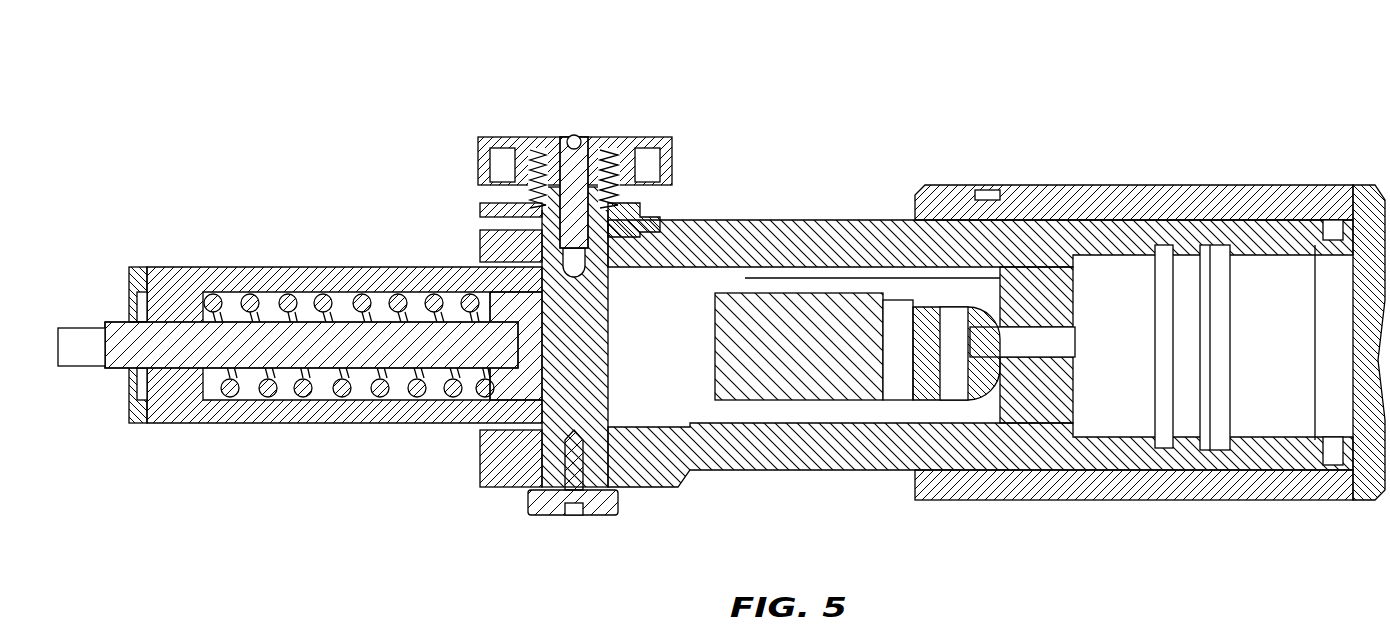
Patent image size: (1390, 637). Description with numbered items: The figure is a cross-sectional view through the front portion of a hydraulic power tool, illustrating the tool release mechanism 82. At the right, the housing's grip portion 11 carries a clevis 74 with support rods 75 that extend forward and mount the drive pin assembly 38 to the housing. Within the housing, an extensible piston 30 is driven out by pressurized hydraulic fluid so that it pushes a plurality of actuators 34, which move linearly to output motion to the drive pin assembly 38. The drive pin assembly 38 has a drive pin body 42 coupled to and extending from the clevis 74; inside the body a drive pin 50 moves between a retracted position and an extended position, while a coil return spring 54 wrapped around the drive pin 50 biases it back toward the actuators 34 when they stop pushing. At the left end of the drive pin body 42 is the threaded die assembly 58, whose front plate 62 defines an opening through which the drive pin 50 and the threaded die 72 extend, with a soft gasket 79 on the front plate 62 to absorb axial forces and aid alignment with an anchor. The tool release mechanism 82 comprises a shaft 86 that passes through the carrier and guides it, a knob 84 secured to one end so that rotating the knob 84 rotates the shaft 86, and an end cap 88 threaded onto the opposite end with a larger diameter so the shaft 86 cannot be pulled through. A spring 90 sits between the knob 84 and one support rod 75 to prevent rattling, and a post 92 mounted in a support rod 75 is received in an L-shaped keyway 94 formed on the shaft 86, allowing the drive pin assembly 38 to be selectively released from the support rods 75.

The grip portion 11 is at (1025, 205).
The piston 30 is at (1010, 380).
The actuators 34 is at (967, 372).
The drive pin assembly 38 is at (297, 331).
The drive pin body 42 is at (285, 267).
The drive pin 50 is at (250, 347).
The return spring 54 is at (248, 292).
The threaded die assembly 58 is at (95, 292).
The front plate 62 is at (137, 423).
The threaded die 72 is at (83, 350).
The clevis 74 is at (1130, 230).
The support rods 75 is at (840, 245).
The gasket 79 is at (127, 383).
The tool release mechanism 82 is at (577, 301).
The knob 84 is at (622, 137).
The shaft 86 is at (565, 375).
The end cap 88 is at (543, 505).
The spring 90 is at (527, 207).
The post 92 is at (657, 223).
The L-shaped keyway 94 is at (668, 137).